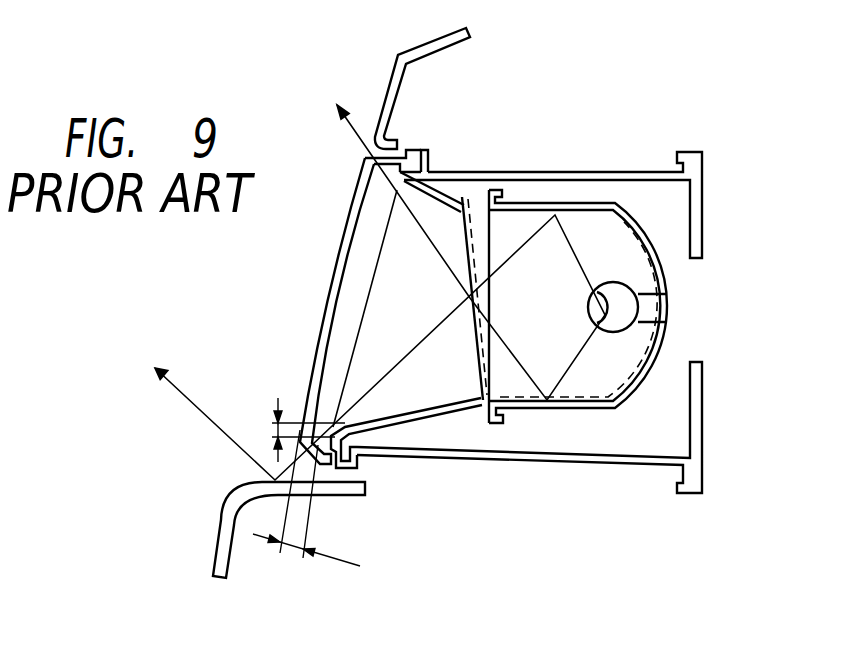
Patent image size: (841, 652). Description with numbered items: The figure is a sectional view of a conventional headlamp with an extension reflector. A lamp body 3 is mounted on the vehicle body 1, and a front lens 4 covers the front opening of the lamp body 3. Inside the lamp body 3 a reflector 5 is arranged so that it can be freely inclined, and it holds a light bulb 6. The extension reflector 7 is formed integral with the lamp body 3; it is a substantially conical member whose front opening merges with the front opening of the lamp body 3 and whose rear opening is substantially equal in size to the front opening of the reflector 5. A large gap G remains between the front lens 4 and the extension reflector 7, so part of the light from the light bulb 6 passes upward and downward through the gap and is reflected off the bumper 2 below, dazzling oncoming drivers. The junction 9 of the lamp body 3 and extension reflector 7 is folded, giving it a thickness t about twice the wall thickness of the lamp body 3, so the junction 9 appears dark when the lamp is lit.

The vehicle body 1 is at (395, 77).
The bumper 2 is at (231, 503).
The lamp body 3 is at (518, 171).
The front lens 4 is at (331, 312).
The reflector 5 is at (546, 402).
The light bulb 6 is at (622, 305).
The extension reflector 7 is at (412, 426).
The junction 9 is at (376, 162).